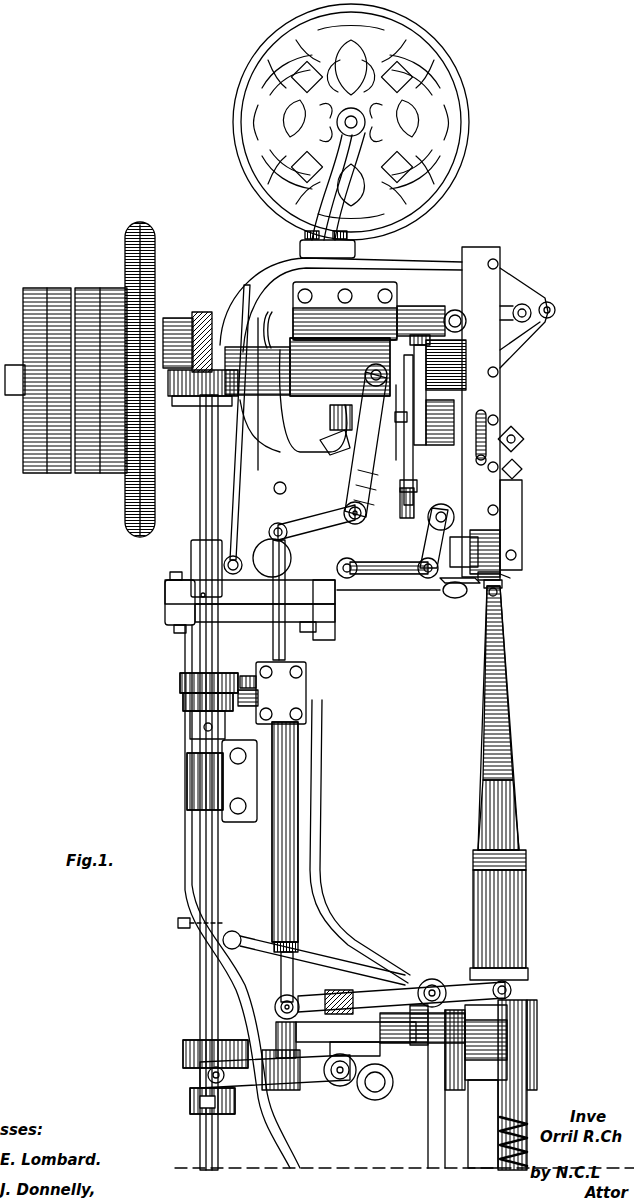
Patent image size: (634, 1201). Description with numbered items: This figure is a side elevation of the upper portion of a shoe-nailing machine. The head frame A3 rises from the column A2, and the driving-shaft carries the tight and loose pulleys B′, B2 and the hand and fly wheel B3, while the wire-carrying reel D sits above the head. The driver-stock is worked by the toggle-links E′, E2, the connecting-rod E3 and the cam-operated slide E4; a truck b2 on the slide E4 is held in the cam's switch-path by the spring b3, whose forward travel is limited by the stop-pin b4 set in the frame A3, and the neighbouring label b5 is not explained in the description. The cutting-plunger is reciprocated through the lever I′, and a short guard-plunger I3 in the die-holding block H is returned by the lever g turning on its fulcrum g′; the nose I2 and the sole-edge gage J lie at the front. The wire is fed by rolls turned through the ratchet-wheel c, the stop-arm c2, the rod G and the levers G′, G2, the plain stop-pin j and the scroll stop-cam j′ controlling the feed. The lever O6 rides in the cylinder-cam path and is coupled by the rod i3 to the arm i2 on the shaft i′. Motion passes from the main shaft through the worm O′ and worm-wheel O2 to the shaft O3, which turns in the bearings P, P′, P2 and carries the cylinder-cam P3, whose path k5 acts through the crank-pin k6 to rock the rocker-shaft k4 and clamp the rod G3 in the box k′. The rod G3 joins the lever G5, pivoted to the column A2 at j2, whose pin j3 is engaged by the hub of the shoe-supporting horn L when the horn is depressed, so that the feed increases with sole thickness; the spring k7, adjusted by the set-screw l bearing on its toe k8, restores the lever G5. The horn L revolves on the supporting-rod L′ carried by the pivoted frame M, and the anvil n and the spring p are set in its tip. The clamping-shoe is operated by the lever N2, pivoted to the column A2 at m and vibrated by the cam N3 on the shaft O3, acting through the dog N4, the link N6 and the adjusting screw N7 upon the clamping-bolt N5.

The wire-carrying reel D is at (358, 131).
The frame of the head A3 is at (357, 378).
The column A2 is at (316, 738).
The cam-operated slide E4 is at (410, 312).
The toggle-link E′ is at (518, 288).
The toggle-link E2 is at (520, 335).
The connecting-rod E3 is at (510, 316).
The tight pulley B′ is at (38, 380).
The loose pulley B2 is at (101, 380).
The hand and fly wheel B3 is at (150, 379).
The worm O′ is at (202, 314).
The worm-wheel O2 is at (222, 395).
The shaft O3 is at (214, 637).
The lever O6 is at (365, 444).
The bearing P is at (205, 782).
The bearing P′ is at (222, 781).
The bearing P2 is at (233, 462).
The cylinder-cam P3 is at (222, 685).
The truck b2 is at (276, 330).
The spring b3 is at (253, 394).
The stop-pin b4 is at (330, 380).
The spring b5 is at (484, 427).
The lever I′ is at (336, 430).
The nose I2 is at (512, 578).
The short plunger I3 is at (505, 567).
The rod G is at (404, 442).
The lever G′ is at (421, 390).
The lever G2 is at (312, 523).
The rod G3 is at (281, 893).
The lever G5 is at (401, 998).
The ratchet-wheel c is at (429, 400).
The stop-arm c2 is at (395, 419).
The lever g is at (516, 514).
The fulcrum g′ is at (517, 438).
The stop-pin j is at (284, 489).
The scroll stop-cam j′ is at (263, 560).
The pivot j2 is at (432, 988).
The laterally-projecting pin j3 is at (512, 990).
The shaft i′ is at (427, 509).
The arm i2 is at (433, 543).
The rod i3 is at (382, 575).
The die-holding block H is at (475, 552).
The sole-edge gage J is at (453, 589).
The spring p is at (501, 587).
The anvil n is at (505, 599).
The shoe-supporting horn L is at (501, 783).
The supporting-rod L′ is at (523, 1141).
The box k′ is at (281, 693).
The rocker-shaft k4 is at (250, 673).
The cam path k5 is at (182, 694).
The crank-pin k6 is at (222, 725).
The spring k7 is at (302, 970).
The toe k8 is at (314, 944).
The set-screw l is at (193, 923).
The pivot m is at (340, 1087).
The pivoted bar or frame M is at (473, 1085).
The lever N2 is at (275, 1070).
The cam N3 is at (200, 1077).
The dog N4 is at (380, 1031).
The clamping-bolt N5 is at (375, 1082).
The link N6 is at (355, 1047).
The adjusting screw N7 is at (280, 1026).